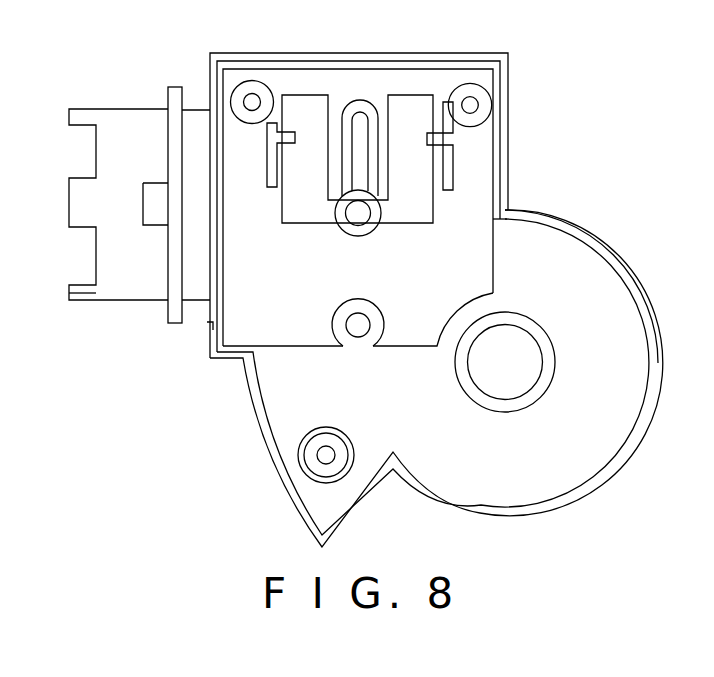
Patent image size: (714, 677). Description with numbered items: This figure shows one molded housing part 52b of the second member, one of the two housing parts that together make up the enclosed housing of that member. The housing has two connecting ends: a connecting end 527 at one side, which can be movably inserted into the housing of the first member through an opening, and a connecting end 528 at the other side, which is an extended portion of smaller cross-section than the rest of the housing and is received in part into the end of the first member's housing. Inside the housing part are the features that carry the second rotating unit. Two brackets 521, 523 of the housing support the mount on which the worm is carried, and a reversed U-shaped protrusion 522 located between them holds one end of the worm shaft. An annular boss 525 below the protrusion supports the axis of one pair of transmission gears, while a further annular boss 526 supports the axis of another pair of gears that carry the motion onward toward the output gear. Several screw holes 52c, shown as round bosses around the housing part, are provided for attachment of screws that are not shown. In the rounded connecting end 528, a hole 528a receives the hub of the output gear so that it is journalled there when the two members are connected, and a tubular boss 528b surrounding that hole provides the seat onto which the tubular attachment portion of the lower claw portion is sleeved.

The housing part 52b is at (212, 333).
The screw holes 52c is at (235, 87).
The bracket 521 is at (273, 190).
The reversed U-shaped protrusion 522 is at (357, 96).
The bracket 523 is at (452, 168).
The annular boss 525 is at (357, 232).
The annular boss 526 is at (372, 315).
The connecting end 527 is at (132, 222).
The connecting end 528 is at (573, 260).
The hole 528a is at (508, 388).
The tubular boss 528b is at (552, 344).